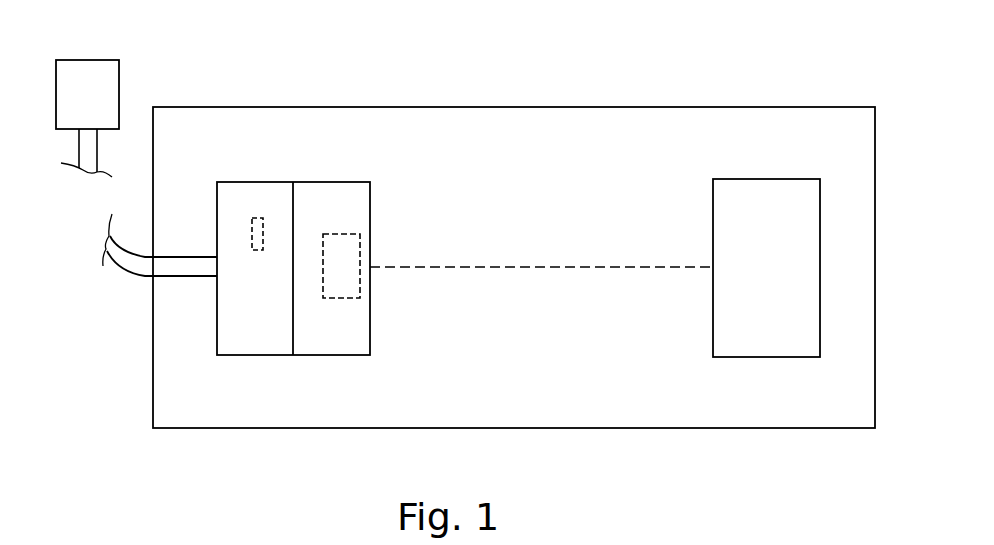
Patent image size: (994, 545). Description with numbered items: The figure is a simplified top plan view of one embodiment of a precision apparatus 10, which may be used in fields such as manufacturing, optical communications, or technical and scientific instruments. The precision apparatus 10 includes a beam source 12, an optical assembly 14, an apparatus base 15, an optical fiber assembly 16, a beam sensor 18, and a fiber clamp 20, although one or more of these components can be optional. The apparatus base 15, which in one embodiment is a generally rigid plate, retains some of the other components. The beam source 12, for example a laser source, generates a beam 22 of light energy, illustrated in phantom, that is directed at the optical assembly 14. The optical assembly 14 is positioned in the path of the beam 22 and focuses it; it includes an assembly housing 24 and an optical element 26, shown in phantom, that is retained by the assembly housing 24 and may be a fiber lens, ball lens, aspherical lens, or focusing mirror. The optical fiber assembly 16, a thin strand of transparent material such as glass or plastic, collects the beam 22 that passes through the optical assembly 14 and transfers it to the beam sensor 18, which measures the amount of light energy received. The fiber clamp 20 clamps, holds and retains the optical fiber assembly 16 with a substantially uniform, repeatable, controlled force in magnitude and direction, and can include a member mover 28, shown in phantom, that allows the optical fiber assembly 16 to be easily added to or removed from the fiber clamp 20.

The precision apparatus 10 is at (634, 146).
The beam source 12 is at (785, 286).
The optical assembly 14 is at (378, 46).
The apparatus base 15 is at (556, 399).
The optical fiber assembly 16 is at (188, 267).
The beam sensor 18 is at (97, 107).
The fiber clamp 20 is at (238, 345).
The beam 22 is at (552, 267).
The assembly housing 24 is at (304, 202).
The optical element 26 is at (343, 247).
The member mover 28 is at (250, 228).